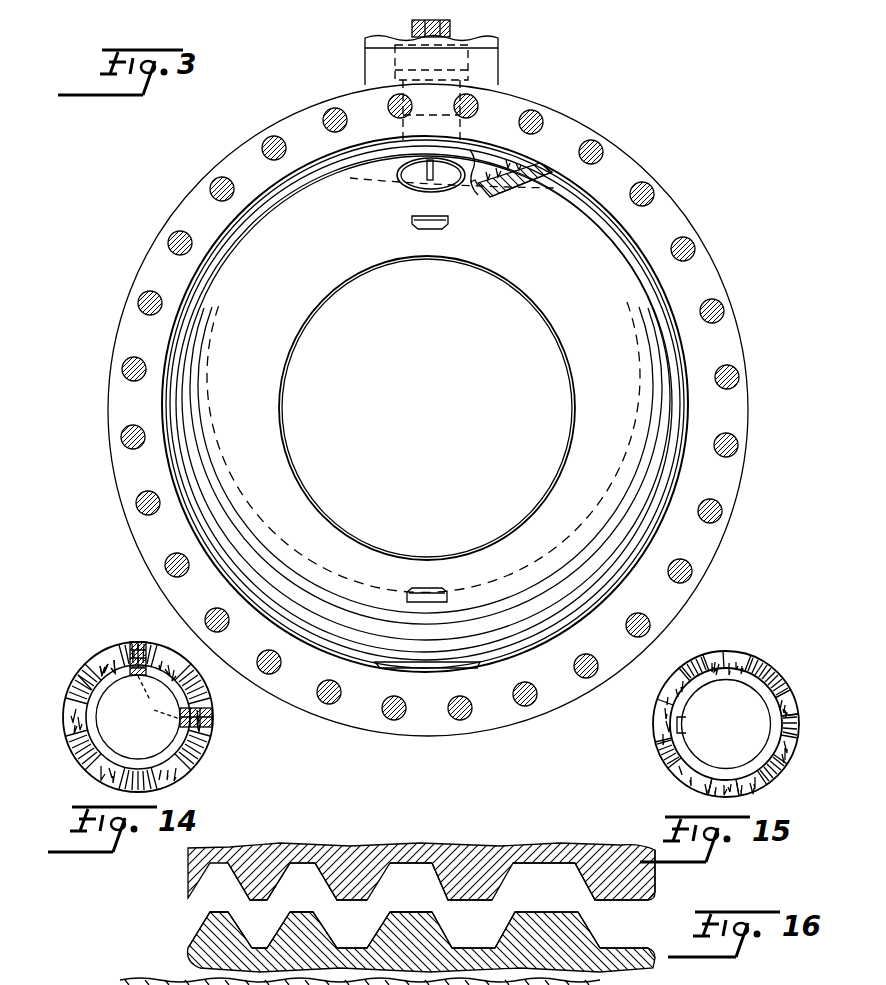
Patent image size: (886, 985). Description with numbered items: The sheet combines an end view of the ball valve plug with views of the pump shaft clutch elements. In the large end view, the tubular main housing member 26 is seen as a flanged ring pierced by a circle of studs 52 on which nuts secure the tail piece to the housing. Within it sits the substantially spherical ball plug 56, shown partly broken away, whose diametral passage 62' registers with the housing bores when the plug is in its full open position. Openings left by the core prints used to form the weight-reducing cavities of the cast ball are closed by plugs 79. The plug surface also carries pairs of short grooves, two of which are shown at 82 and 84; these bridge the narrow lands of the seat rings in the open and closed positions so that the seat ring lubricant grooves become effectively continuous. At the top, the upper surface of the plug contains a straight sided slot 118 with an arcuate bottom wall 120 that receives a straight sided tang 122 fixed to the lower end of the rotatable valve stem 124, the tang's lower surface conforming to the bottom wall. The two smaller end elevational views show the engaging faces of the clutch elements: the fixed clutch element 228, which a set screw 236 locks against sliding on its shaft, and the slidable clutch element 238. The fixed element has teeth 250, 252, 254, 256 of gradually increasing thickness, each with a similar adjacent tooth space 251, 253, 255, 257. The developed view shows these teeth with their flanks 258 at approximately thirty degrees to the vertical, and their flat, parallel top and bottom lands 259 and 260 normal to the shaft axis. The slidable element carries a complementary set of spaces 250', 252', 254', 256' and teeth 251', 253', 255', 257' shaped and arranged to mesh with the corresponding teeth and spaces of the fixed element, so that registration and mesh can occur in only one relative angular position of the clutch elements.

In FIG. 3, the tubular main housing member 26 is at (672, 206).
In FIG. 3, the studs 52 is at (332, 110).
In FIG. 3, the ball plug 56 is at (498, 272).
In FIG. 3, the diametral passage 62' is at (427, 408).
In FIG. 3, the plugs 79 is at (413, 180).
In FIG. 3, the short groove 82 is at (424, 588).
In FIG. 3, the short groove 84 is at (440, 227).
In FIG. 3, the straight sided slot 118 is at (540, 183).
In FIG. 3, the arcuate bottom wall 120 is at (498, 188).
In FIG. 3, the tang 122 is at (484, 168).
In FIG. 3, the valve stem 124 is at (450, 28).
In FIG. 14, the fixed clutch element 228 is at (141, 640).
In FIG. 16, the fixed clutch element 228 is at (190, 951).
In FIG. 14, the set screw 236 is at (159, 697).
In FIG. 15, the slidable clutch element 238 is at (703, 655).
In FIG. 16, the slidable clutch element 238 is at (470, 845).
In FIG. 14, the tooth 250 is at (74, 676).
In FIG. 16, the tooth 250 is at (229, 930).
In FIG. 14, the tooth space 251 is at (65, 711).
In FIG. 16, the tooth space 251 is at (268, 930).
In FIG. 14, the tooth 252 is at (71, 764).
In FIG. 16, the tooth 252 is at (313, 930).
In FIG. 14, the tooth space 253 is at (126, 759).
In FIG. 16, the tooth space 253 is at (363, 930).
In FIG. 14, the tooth 254 is at (195, 760).
In FIG. 16, the tooth 254 is at (387, 917).
In FIG. 14, the tooth space 255 is at (218, 718).
In FIG. 16, the tooth space 255 is at (473, 938).
In FIG. 14, the tooth 256 is at (198, 680).
In FIG. 16, the tooth 256 is at (517, 930).
In FIG. 14, the tooth space 257 is at (111, 650).
In FIG. 16, the tooth space 257 is at (627, 940).
In FIG. 16, the tooth flanks 258 is at (197, 912).
In FIG. 16, the top lands 259 is at (296, 910).
In FIG. 16, the bottom lands 260 is at (452, 942).
In FIG. 15, the space 250' is at (754, 697).
In FIG. 16, the space 250' is at (238, 859).
In FIG. 15, the tooth 251' is at (762, 717).
In FIG. 16, the tooth 251' is at (269, 859).
In FIG. 15, the space 252' is at (778, 699).
In FIG. 16, the space 252' is at (308, 841).
In FIG. 15, the tooth 253' is at (777, 783).
In FIG. 16, the tooth 253' is at (328, 881).
In FIG. 15, the space 254' is at (688, 793).
In FIG. 16, the space 254' is at (413, 841).
In FIG. 15, the tooth 255' is at (644, 736).
In FIG. 16, the tooth 255' is at (446, 881).
In FIG. 15, the space 256' is at (672, 667).
In FIG. 16, the space 256' is at (544, 877).
In FIG. 15, the tooth 257' is at (763, 660).
In FIG. 16, the tooth 257' is at (628, 875).